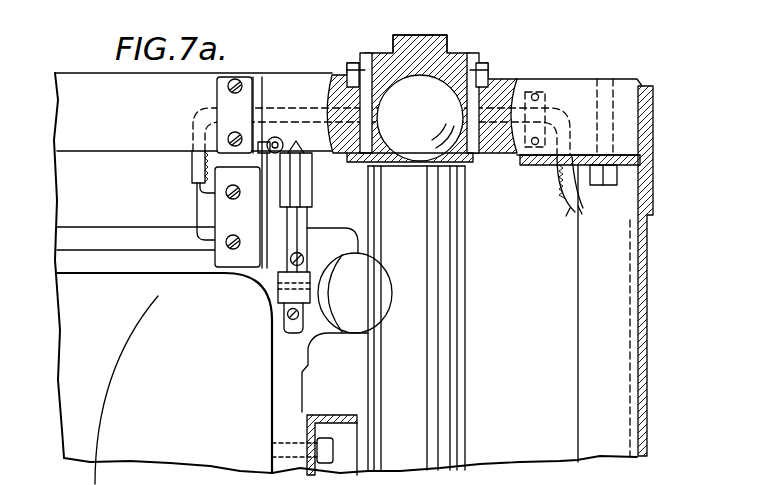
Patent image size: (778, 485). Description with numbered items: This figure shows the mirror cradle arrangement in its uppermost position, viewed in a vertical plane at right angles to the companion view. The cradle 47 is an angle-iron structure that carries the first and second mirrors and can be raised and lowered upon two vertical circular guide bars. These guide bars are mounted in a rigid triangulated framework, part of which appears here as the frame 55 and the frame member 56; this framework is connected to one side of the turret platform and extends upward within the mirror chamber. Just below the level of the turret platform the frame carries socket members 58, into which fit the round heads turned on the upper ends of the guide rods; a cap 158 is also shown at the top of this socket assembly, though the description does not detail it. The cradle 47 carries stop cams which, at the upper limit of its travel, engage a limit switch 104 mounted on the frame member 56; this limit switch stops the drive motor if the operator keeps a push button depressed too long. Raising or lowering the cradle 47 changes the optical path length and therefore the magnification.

The socket member 58 is at (400, 100).
The cap 158 is at (448, 40).
The frame member 56 is at (571, 97).
The frame 55 is at (643, 372).
The limit switch 104 is at (240, 220).
The cradle 47 is at (302, 408).